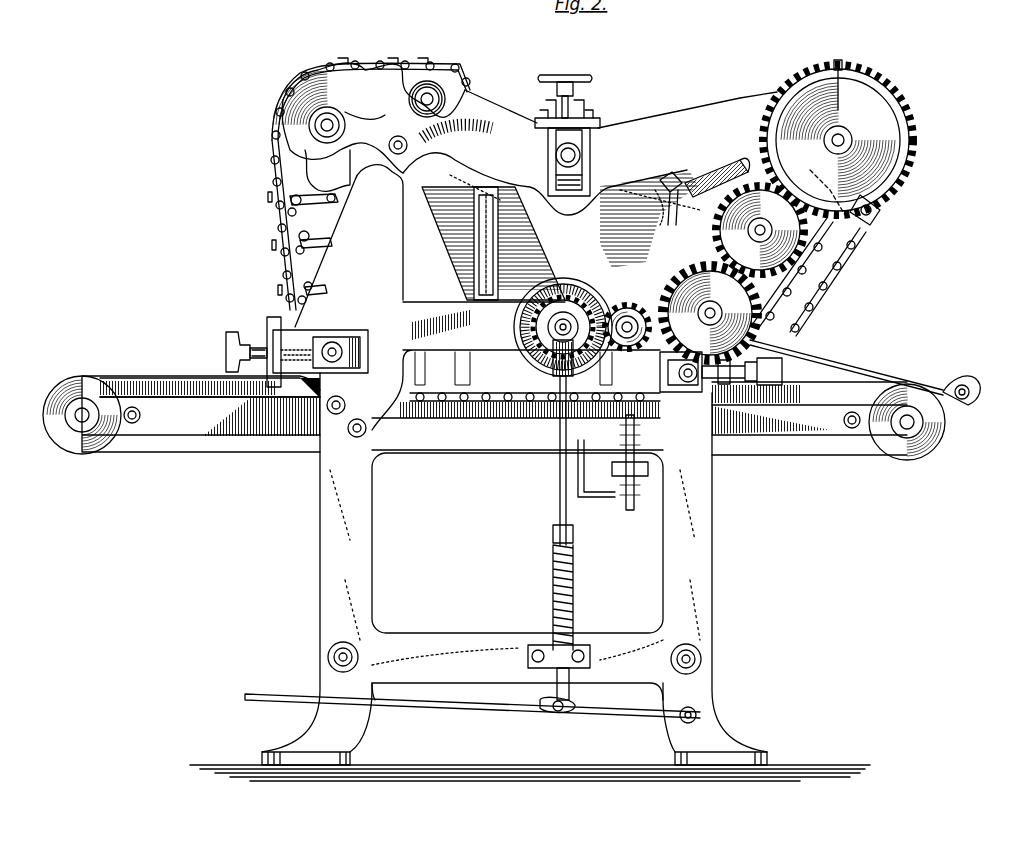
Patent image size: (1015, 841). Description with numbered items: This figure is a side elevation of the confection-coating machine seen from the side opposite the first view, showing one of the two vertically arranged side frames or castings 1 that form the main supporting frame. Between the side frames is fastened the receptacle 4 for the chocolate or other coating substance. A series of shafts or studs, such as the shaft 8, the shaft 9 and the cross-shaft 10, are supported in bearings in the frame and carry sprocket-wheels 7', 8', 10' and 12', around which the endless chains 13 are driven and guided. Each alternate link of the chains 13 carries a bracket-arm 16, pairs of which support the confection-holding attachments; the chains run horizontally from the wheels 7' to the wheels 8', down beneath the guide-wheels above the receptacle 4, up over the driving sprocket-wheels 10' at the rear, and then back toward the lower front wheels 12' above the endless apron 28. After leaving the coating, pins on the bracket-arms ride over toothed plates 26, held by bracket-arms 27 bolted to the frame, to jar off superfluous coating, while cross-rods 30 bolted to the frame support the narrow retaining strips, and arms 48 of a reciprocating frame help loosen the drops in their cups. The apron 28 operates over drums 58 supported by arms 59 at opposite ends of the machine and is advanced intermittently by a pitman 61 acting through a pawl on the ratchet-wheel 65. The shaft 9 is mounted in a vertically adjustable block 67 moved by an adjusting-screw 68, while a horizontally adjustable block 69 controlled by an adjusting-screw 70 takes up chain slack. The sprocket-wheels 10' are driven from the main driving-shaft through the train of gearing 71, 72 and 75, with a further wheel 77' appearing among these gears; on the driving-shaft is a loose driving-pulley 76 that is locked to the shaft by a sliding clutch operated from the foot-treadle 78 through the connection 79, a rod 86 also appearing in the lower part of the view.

The side frame 1 is at (368, 590).
The receptacle 4 is at (504, 243).
The sprocket-wheel 7' is at (321, 107).
The shaft 8 is at (436, 105).
The sprocket-wheel 8' is at (432, 75).
The shaft 9 is at (557, 153).
The shaft 10 is at (852, 131).
The sprocket-wheel 10' is at (853, 137).
The sprocket-wheel 12' is at (391, 339).
The endless chain 13 is at (272, 212).
The bracket-arm 16 is at (322, 237).
The toothed plate 26 is at (672, 180).
The bracket-arm 27 is at (718, 170).
The endless apron 28 is at (175, 372).
The cross-rod 30 is at (880, 212).
The arm 48 is at (575, 438).
The drum 58 is at (96, 450).
The arm 59 is at (494, 415).
The pitman 61 is at (866, 372).
The ratchet-wheel 65 is at (978, 398).
The adjustable block 67 is at (583, 163).
The adjusting-screw 68 is at (577, 103).
The adjustable block 69 is at (334, 342).
The adjusting-screw 70 is at (226, 340).
The gear 71 is at (572, 300).
The gear 72 is at (627, 303).
The gear 75 is at (716, 215).
The driving-pulley 76 is at (540, 290).
The gear 77' is at (760, 230).
The foot-treadle 78 is at (495, 715).
The connection 79 is at (573, 592).
The rod 86 is at (560, 472).